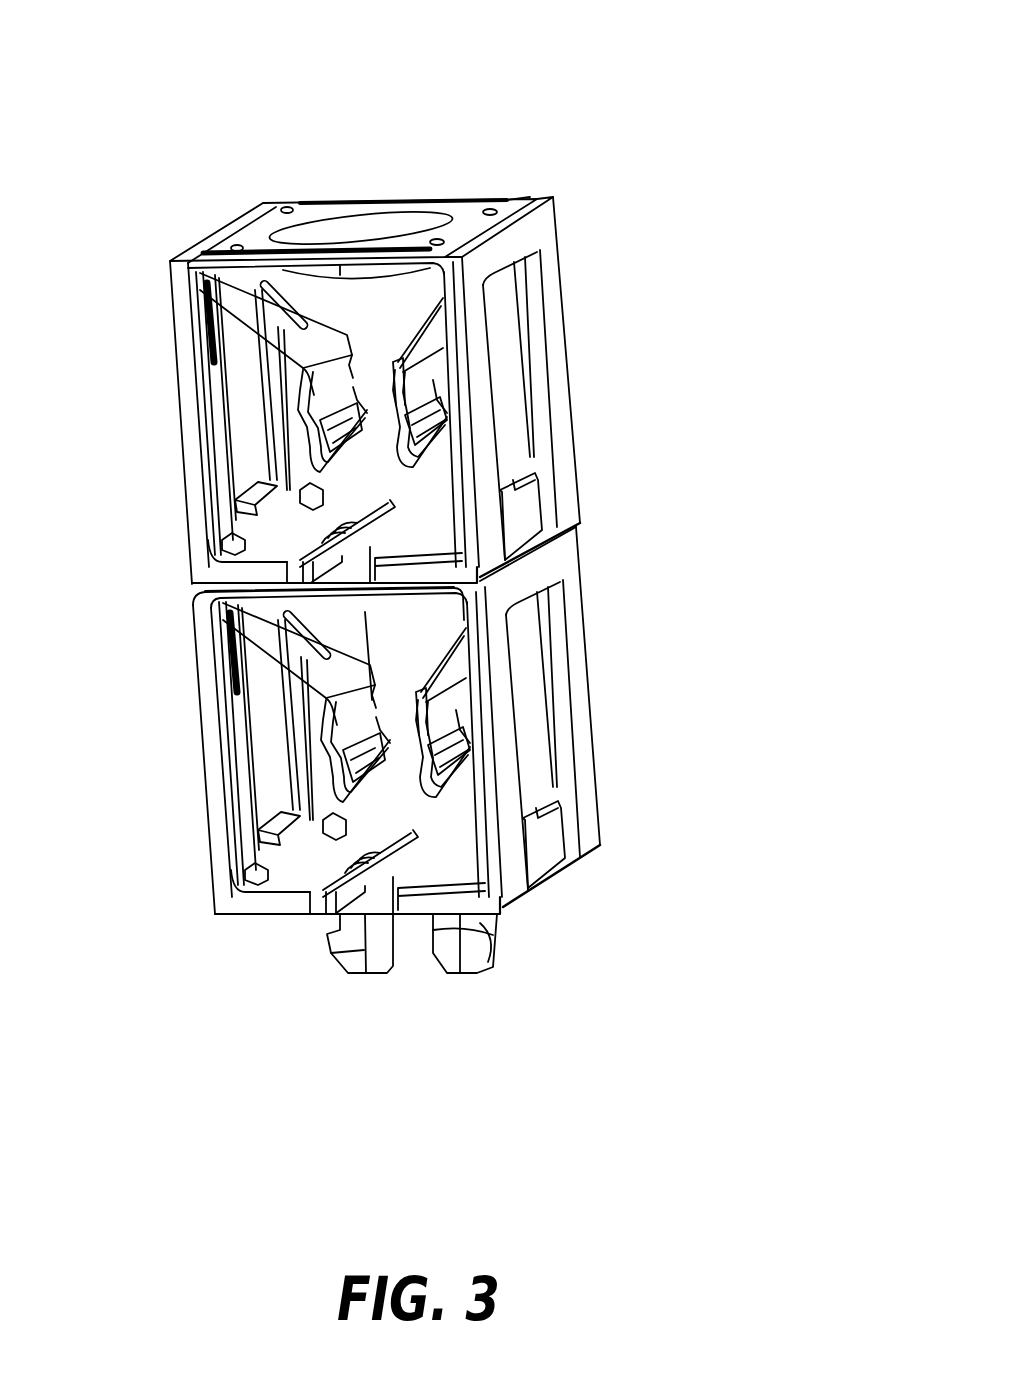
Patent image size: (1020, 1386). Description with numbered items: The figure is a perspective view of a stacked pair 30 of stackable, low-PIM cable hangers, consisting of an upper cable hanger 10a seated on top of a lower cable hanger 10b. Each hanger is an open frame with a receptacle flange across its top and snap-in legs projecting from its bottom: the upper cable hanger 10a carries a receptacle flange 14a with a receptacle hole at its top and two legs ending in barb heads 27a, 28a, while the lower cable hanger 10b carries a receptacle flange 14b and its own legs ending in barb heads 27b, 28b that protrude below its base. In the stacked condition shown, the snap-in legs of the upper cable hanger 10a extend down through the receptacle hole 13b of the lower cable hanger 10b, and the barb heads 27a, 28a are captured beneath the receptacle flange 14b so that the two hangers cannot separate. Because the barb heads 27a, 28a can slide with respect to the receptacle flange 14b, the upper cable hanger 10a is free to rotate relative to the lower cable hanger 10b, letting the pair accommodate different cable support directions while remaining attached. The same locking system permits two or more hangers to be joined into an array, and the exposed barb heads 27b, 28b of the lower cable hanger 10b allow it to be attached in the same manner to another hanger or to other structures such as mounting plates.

The stacked pair 30 is at (733, 88).
The upper cable hanger 10a is at (647, 347).
The lower cable hanger 10b is at (645, 709).
The receptacle flange 14a is at (360, 225).
The receptacle flange 14b is at (375, 602).
The cavity of second housing 13b is at (378, 606).
The barb head 27a is at (325, 671).
The barb head 27b is at (363, 972).
The barb head 28a is at (545, 637).
The barb head 28b is at (478, 968).